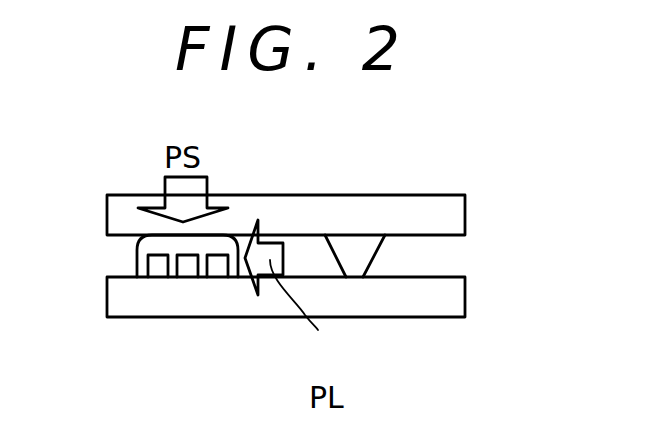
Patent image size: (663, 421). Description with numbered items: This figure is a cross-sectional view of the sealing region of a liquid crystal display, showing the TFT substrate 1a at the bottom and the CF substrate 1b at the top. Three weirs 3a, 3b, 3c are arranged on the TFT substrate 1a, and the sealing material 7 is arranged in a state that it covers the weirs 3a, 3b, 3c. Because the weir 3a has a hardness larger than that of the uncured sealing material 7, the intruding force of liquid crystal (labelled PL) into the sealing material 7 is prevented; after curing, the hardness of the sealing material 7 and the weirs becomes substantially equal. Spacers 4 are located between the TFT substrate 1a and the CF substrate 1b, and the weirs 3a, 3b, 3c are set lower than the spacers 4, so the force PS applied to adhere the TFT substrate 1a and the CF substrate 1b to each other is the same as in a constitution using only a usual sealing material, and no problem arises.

The TFT substrate 1a is at (405, 298).
The CF substrate 1b is at (370, 212).
The weir 3a is at (217, 270).
The weir 3b is at (187, 270).
The weir 3c is at (157, 270).
The spacer 4 is at (365, 253).
The sealing material 7 is at (140, 247).